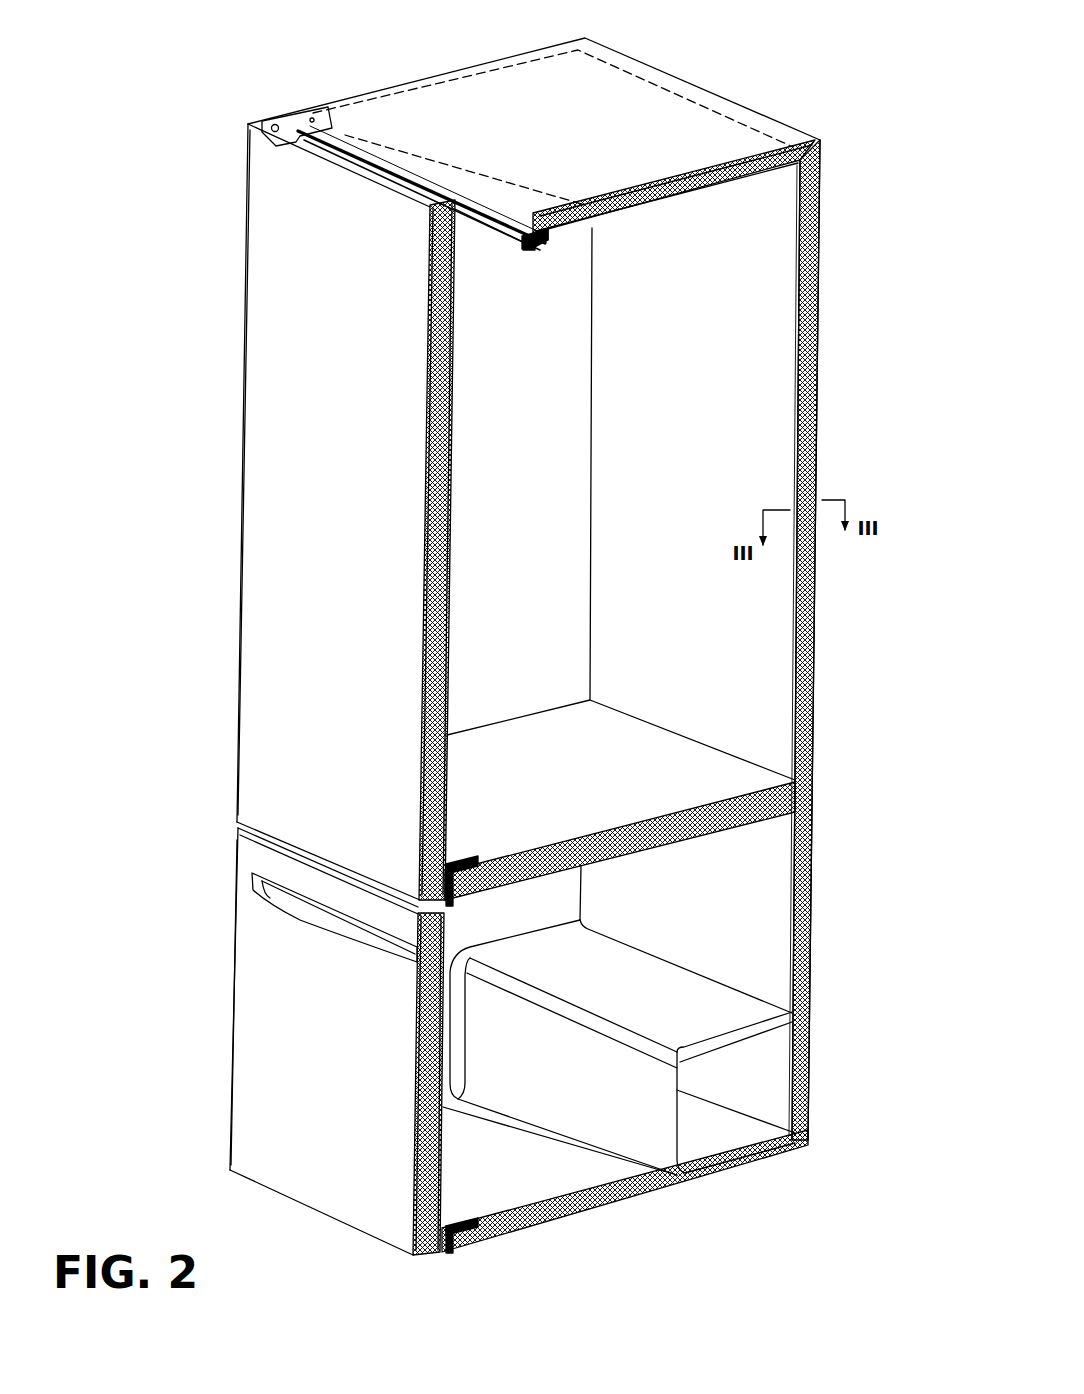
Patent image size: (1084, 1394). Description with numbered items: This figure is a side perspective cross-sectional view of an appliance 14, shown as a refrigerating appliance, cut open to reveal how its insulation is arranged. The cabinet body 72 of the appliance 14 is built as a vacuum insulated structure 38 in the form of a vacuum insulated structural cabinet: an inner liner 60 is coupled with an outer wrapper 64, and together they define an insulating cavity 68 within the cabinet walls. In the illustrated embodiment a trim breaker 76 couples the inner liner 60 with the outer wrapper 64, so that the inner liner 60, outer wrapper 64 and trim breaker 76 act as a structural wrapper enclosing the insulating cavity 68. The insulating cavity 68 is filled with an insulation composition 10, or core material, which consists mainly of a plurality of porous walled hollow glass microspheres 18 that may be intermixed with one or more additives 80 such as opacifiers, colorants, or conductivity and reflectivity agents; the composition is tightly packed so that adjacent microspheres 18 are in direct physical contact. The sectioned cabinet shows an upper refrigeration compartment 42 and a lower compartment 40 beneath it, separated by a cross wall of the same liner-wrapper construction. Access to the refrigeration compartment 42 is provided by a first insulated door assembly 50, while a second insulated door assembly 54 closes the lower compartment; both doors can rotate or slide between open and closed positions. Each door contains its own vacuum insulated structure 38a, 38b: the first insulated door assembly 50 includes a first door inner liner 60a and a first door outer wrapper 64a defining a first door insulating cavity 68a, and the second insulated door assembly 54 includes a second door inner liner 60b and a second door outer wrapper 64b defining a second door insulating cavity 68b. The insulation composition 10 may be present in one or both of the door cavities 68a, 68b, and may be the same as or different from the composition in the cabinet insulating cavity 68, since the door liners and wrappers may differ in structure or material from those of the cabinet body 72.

The insulation composition 10 is at (790, 318).
The appliance 14 is at (265, 100).
The porous walled hollow glass microspheres 18 is at (820, 352).
The vacuum insulated structure 38 is at (820, 572).
The vacuum insulated structure 38a is at (222, 684).
The vacuum insulated structure 38b is at (222, 1117).
The lower compartment 40 is at (710, 945).
The refrigeration compartment 42 is at (672, 683).
The first insulated door assembly 50 is at (278, 176).
The second insulated door assembly 54 is at (235, 928).
The inner liner 60 is at (705, 185).
The first door inner liner 60a is at (450, 560).
The second door inner liner 60b is at (412, 1190).
The outer wrapper 64 is at (632, 195).
The first door outer wrapper 64a is at (255, 238).
The second door outer wrapper 64b is at (337, 1170).
The insulating cavity 68 is at (790, 152).
The first door insulating cavity 68a is at (430, 665).
The second door insulating cavity 68b is at (420, 1002).
The cabinet body 72 is at (830, 160).
The trim breaker 76 is at (497, 230).
The additives 80 is at (812, 395).